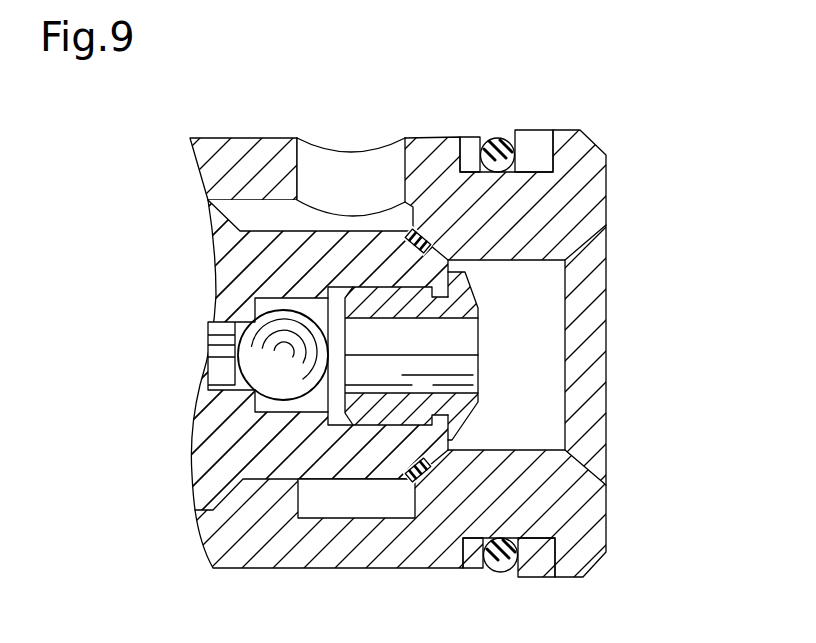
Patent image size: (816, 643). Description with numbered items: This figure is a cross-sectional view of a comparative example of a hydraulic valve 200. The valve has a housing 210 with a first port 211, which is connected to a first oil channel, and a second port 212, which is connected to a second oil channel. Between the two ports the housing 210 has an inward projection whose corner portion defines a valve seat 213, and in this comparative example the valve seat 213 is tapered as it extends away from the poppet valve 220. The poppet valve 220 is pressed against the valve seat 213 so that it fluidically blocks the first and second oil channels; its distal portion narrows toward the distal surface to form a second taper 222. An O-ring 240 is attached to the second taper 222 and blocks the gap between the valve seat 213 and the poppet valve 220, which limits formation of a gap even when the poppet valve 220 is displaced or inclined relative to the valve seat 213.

The hydraulic valve 200 is at (214, 109).
The housing 210 is at (247, 548).
The poppet valve 220 is at (332, 236).
The second port 212 is at (366, 163).
The first port 211 is at (550, 347).
The valve seat 213 is at (434, 468).
The O-ring 240 is at (427, 232).
The second taper 222 is at (450, 448).